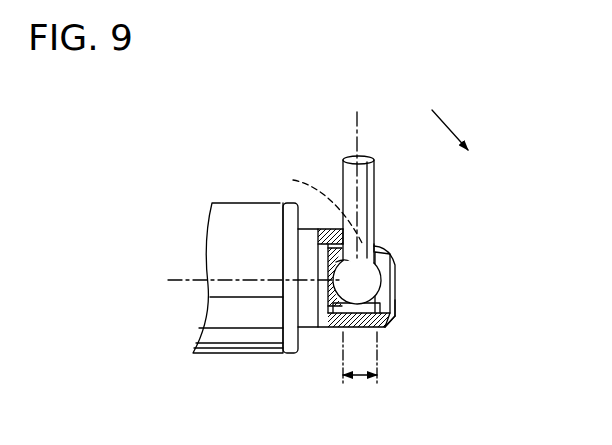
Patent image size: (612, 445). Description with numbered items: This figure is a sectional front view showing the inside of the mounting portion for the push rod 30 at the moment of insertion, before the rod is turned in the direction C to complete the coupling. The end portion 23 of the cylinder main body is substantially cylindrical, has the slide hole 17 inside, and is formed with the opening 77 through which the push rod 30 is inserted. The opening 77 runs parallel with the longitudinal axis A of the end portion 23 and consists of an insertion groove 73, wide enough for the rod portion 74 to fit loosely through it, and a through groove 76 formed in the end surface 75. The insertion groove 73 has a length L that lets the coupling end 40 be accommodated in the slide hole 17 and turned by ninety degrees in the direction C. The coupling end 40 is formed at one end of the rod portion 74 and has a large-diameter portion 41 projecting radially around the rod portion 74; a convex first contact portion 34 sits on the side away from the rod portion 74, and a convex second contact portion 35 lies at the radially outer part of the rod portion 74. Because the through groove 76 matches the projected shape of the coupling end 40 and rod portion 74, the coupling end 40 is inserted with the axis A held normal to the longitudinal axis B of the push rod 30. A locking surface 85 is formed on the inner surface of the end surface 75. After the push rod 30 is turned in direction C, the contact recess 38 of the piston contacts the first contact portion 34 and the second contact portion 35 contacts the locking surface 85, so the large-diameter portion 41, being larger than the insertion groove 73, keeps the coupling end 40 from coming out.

The slide hole 17 is at (313, 202).
The end portion 23 is at (317, 330).
The push rod 30 is at (349, 180).
The first contact portion 34 is at (352, 287).
The second contact portion 35 is at (383, 276).
The contact recess 38 is at (390, 312).
The coupling end 40 is at (391, 303).
The large-diameter portion 41 is at (392, 287).
The insertion groove 73 is at (383, 243).
The rod portion 74 is at (375, 178).
The end surface 75 is at (396, 318).
The through groove 76 is at (392, 265).
The opening 77 is at (406, 323).
The locking surface 85 is at (384, 256).
The longitudinal axis of the end portion A is at (247, 267).
The longitudinal axis of the push rod B is at (367, 179).
The turning direction C is at (458, 144).
The length of the insertion groove L is at (360, 370).